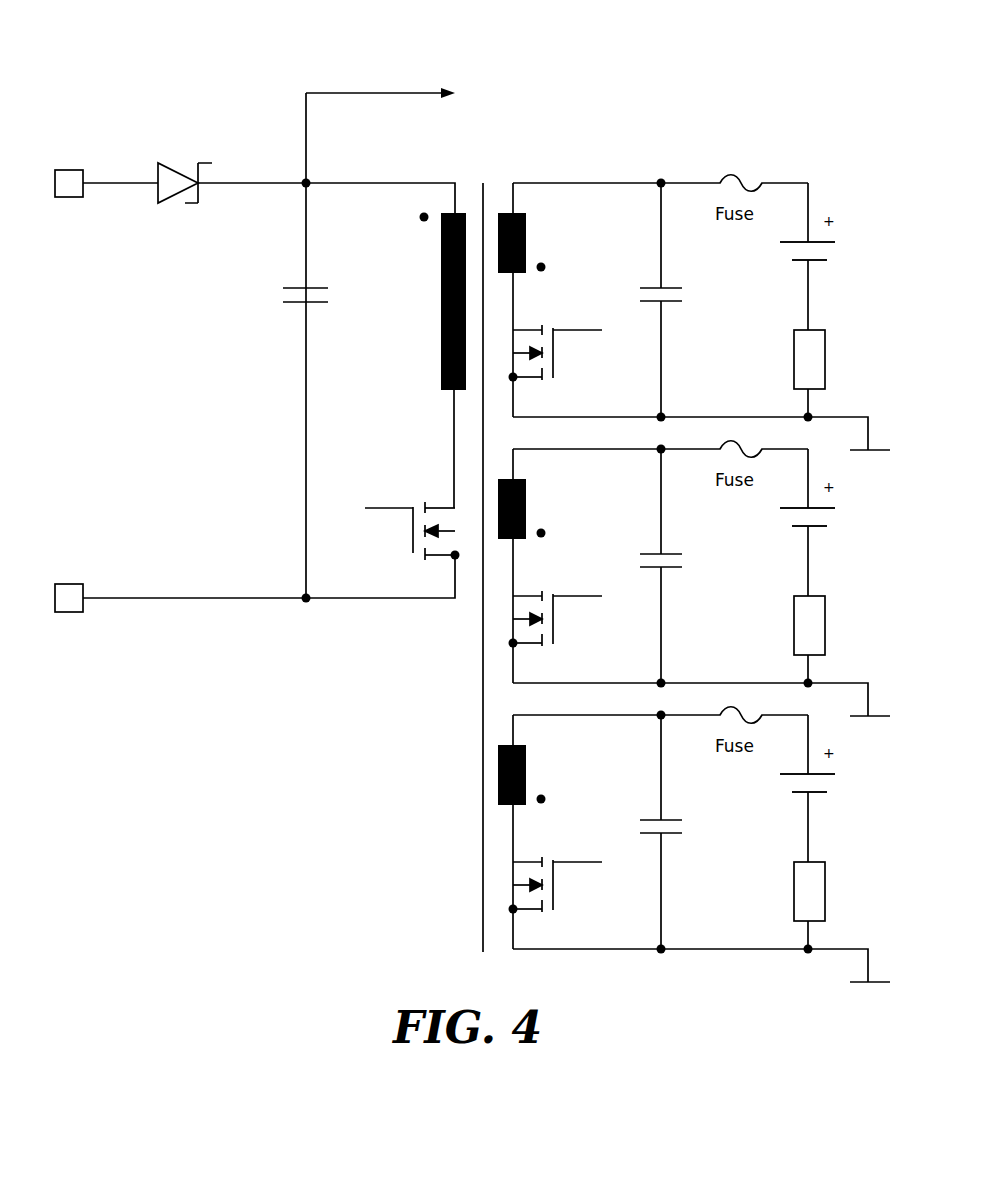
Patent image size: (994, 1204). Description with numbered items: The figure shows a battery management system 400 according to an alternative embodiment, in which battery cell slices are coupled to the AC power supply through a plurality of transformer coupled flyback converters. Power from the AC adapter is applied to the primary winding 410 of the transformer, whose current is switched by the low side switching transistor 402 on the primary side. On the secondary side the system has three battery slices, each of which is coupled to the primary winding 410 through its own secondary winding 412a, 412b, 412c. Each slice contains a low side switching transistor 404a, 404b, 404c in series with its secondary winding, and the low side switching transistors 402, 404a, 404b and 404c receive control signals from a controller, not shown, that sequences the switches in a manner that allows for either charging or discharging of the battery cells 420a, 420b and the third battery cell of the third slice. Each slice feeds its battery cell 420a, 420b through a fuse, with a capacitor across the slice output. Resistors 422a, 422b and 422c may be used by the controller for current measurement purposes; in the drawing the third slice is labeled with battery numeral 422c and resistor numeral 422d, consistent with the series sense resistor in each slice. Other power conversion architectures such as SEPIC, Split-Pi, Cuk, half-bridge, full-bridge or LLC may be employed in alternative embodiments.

The battery management system 400 is at (184, 78).
The primary winding 410 is at (440, 283).
The low side switching transistor 402 is at (433, 503).
The secondary winding 412a is at (527, 242).
The low side switching transistor 404a is at (541, 328).
The battery cell 420a is at (833, 242).
The resistor 422a is at (823, 363).
The secondary winding 412b is at (539, 505).
The low side switching transistor 404b is at (556, 602).
The battery cell 420b is at (834, 498).
The resistor 422b is at (836, 622).
The secondary winding 412c is at (539, 771).
The low side switching transistor 404c is at (556, 868).
The resistor 422c is at (833, 764).
The sense resistor 422d is at (836, 888).